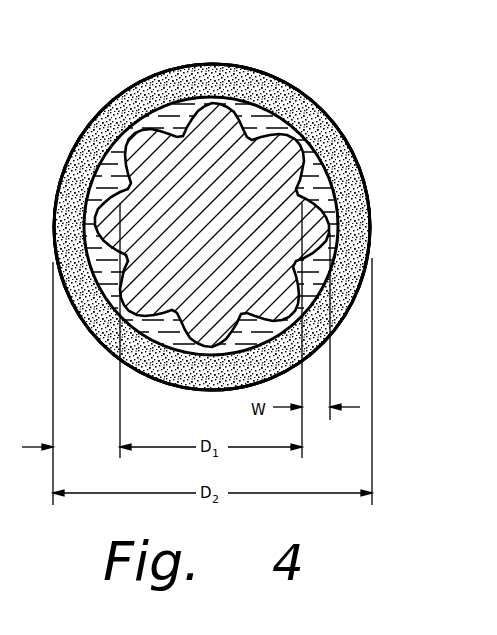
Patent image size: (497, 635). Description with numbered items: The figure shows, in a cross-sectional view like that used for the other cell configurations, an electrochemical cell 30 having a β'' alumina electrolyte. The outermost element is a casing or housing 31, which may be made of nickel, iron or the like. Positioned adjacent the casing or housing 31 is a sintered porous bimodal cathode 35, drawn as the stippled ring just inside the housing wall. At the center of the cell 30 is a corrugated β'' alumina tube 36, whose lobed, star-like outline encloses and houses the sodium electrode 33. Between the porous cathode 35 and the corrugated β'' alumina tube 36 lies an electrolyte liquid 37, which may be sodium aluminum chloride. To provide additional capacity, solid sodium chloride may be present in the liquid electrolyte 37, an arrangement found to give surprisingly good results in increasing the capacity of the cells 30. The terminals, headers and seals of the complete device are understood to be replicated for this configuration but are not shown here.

The cell 30 is at (358, 51).
The casing or housing 31 is at (126, 98).
The sodium electrode 33 is at (218, 197).
The sintered porous bimodal cathode 35 is at (246, 70).
The corrugated β'' alumina tube 36 is at (150, 127).
The electrolyte liquid 37 is at (323, 162).